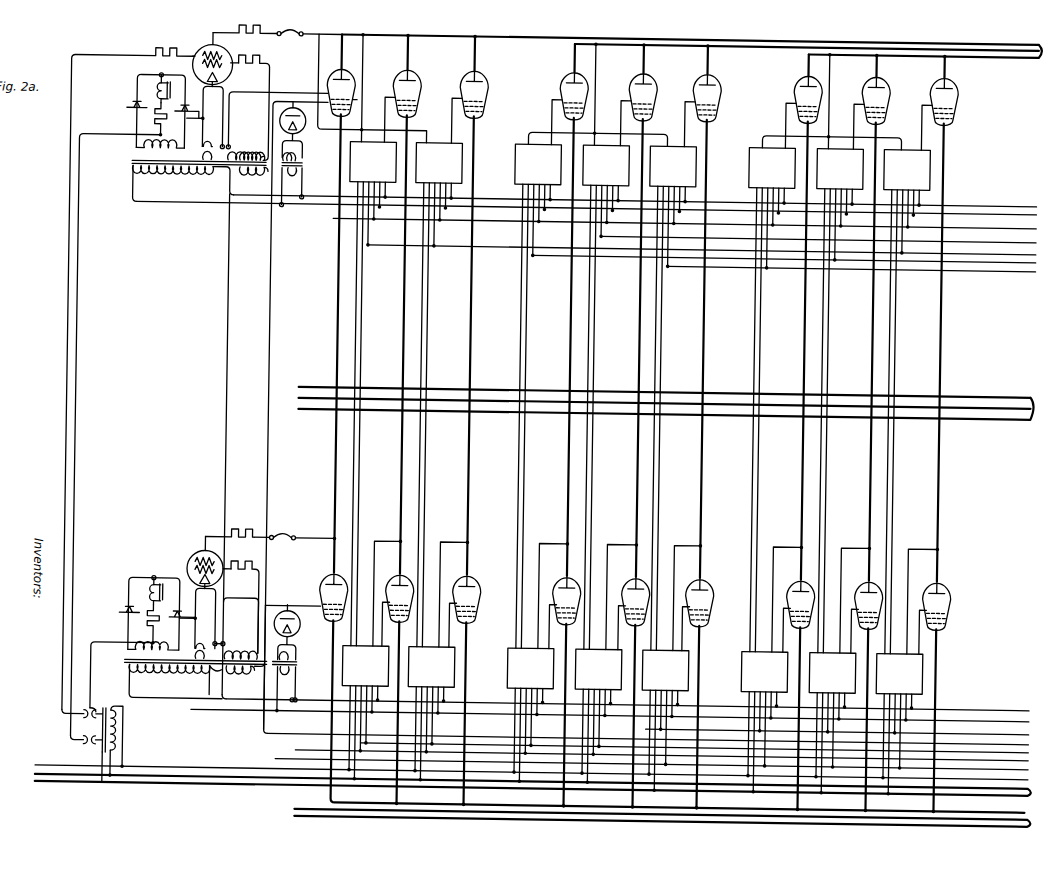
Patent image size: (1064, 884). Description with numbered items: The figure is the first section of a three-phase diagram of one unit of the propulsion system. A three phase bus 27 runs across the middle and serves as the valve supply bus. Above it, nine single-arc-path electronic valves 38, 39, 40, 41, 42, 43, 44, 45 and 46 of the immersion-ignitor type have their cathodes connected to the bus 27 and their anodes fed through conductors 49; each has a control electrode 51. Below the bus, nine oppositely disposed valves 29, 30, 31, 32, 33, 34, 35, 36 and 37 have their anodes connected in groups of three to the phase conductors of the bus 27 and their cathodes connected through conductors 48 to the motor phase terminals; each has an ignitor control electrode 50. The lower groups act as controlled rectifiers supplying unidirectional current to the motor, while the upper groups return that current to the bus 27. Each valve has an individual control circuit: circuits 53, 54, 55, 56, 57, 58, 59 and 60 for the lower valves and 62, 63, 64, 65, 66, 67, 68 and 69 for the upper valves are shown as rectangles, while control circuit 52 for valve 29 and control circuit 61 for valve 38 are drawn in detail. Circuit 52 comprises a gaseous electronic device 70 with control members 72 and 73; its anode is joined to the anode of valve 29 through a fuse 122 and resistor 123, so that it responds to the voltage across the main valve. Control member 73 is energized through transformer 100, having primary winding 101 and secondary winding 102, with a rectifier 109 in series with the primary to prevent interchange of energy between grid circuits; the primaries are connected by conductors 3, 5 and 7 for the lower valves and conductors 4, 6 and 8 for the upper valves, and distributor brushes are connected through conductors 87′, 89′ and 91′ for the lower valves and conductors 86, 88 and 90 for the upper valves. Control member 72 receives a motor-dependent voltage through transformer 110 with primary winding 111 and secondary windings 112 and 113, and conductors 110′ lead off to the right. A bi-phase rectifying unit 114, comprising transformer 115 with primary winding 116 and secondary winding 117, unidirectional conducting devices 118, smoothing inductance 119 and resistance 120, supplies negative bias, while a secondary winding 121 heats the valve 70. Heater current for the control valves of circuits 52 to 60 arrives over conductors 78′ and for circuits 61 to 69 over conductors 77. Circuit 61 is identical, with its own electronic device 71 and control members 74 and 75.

The three phase bus 27 is at (677, 403).
The single-arc-path electronic valve 29 is at (327, 581).
The single-arc-path electronic valve 30 is at (393, 581).
The single-arc-path electronic valve 31 is at (460, 581).
The single-arc-path electronic valve 32 is at (560, 581).
The single-arc-path electronic valve 33 is at (629, 581).
The single-arc-path electronic valve 34 is at (693, 581).
The single-arc-path electronic valve 35 is at (794, 581).
The single-arc-path electronic valve 36 is at (862, 581).
The single-arc-path electronic valve 37 is at (930, 581).
The single-arc-path electronic valve 38 is at (329, 73).
The single-arc-path electronic valve 39 is at (395, 73).
The single-arc-path electronic valve 40 is at (462, 73).
The single-arc-path electronic valve 41 is at (562, 73).
The single-arc-path electronic valve 42 is at (631, 73).
The single-arc-path electronic valve 43 is at (695, 73).
The single-arc-path electronic valve 44 is at (796, 73).
The single-arc-path electronic valve 45 is at (864, 73).
The single-arc-path electronic valve 46 is at (932, 73).
The conductors 48 is at (672, 821).
The conductors 49 is at (701, 46).
The control member 50 is at (323, 612).
The control member 51 is at (352, 104).
The control circuit 52 is at (176, 682).
The control circuit 53 is at (365, 713).
The control circuit 54 is at (431, 714).
The control circuit 55 is at (530, 715).
The control circuit 56 is at (598, 716).
The control circuit 57 is at (665, 721).
The control circuit 58 is at (764, 723).
The control circuit 59 is at (832, 724).
The control circuit 60 is at (899, 725).
The control circuit 61 is at (200, 181).
The control circuit 62 is at (370, 394).
The control circuit 63 is at (436, 395).
The control circuit 64 is at (535, 396).
The control circuit 65 is at (603, 397).
The control circuit 66 is at (670, 398).
The control circuit 67 is at (769, 400).
The control circuit 68 is at (837, 401).
The control circuit 69 is at (904, 402).
The electronic device 70 is at (200, 563).
The vacuum tube 71 is at (199, 56).
The control member 72 is at (218, 566).
The control member 73 is at (217, 581).
The grid element 74 is at (221, 62).
The grid element 75 is at (219, 74).
The conductors 77 is at (1033, 201).
The conductor 90 is at (1033, 209).
The conductor 86 is at (1033, 223).
The conductor 88 is at (1033, 237).
The conductor 6 is at (1033, 249).
The conductor 4 is at (1033, 257).
The conductor 8 is at (1033, 266).
The conductors 78′ is at (1037, 713).
The conductor 87′ is at (1033, 729).
The conductor 89′ is at (1033, 739).
The conductor 91′ is at (1033, 747).
The conductor 7 is at (1033, 755).
The conductor 5 is at (1033, 764).
The conductor 3 is at (1033, 774).
The transformer 100 is at (205, 680).
The primary winding 101 is at (240, 681).
The secondary winding 102 is at (240, 645).
The rectifier 109 is at (300, 632).
The transformer 110 is at (110, 779).
The supply conductors 110′ is at (548, 786).
The primary winding 111 is at (120, 736).
The secondary winding 112 is at (82, 720).
The secondary winding 113 is at (82, 747).
The bi-phase rectifying unit 114 is at (131, 594).
The transformer 115 is at (128, 668).
The primary winding 116 is at (132, 673).
The secondary winding 117 is at (136, 657).
The unidirectional conducting devices 118 is at (124, 620).
The smoothing inductance 119 is at (156, 592).
The resistance 120 is at (157, 646).
The secondary winding 121 is at (221, 646).
The fuse 122 is at (283, 539).
The resistor 123 is at (245, 535).